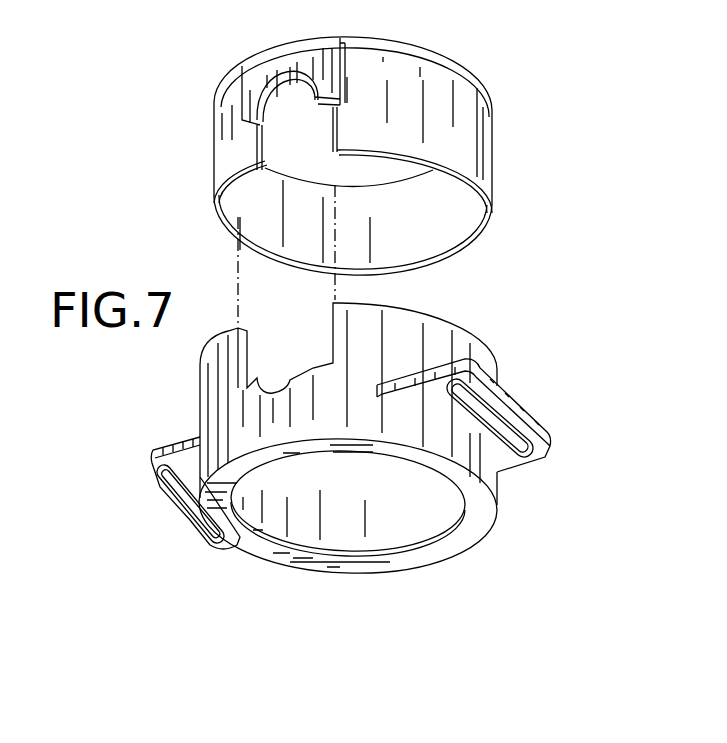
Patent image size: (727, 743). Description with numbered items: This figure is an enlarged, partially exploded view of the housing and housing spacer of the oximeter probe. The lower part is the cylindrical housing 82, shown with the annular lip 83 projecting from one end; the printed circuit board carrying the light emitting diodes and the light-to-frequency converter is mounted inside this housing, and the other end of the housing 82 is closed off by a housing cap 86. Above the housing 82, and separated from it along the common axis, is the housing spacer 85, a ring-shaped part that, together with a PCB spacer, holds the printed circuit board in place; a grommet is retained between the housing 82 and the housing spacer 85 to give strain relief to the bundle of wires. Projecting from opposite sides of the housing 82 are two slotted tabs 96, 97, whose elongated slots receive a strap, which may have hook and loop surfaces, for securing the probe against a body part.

The cylindrical housing 82 is at (410, 343).
The annular lip 83 is at (425, 555).
The housing spacer 85 is at (462, 153).
The housing cap 86 is at (432, 70).
The slotted tab 96 is at (527, 405).
The slotted tab 97 is at (166, 437).